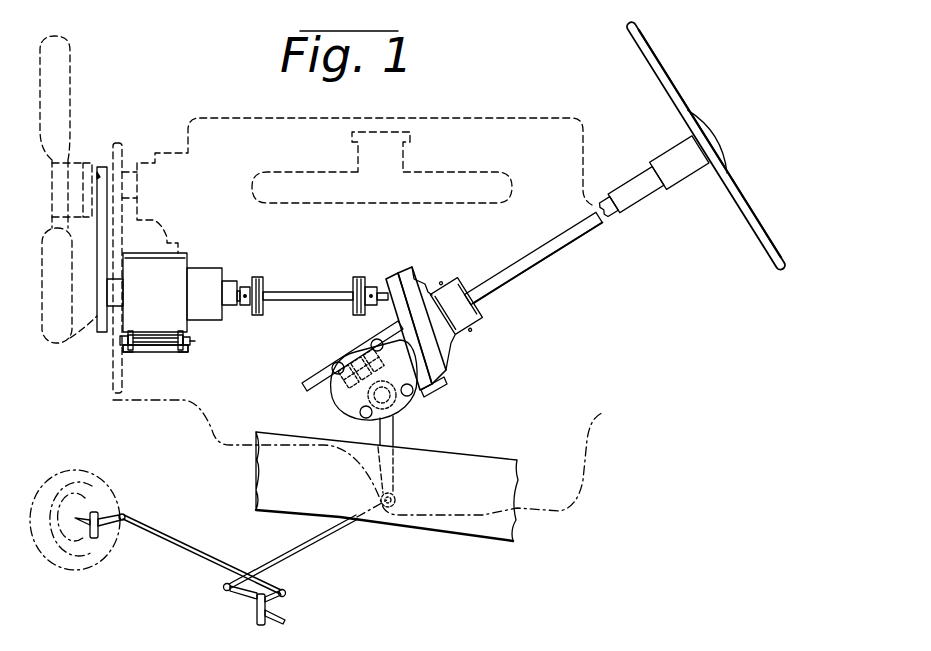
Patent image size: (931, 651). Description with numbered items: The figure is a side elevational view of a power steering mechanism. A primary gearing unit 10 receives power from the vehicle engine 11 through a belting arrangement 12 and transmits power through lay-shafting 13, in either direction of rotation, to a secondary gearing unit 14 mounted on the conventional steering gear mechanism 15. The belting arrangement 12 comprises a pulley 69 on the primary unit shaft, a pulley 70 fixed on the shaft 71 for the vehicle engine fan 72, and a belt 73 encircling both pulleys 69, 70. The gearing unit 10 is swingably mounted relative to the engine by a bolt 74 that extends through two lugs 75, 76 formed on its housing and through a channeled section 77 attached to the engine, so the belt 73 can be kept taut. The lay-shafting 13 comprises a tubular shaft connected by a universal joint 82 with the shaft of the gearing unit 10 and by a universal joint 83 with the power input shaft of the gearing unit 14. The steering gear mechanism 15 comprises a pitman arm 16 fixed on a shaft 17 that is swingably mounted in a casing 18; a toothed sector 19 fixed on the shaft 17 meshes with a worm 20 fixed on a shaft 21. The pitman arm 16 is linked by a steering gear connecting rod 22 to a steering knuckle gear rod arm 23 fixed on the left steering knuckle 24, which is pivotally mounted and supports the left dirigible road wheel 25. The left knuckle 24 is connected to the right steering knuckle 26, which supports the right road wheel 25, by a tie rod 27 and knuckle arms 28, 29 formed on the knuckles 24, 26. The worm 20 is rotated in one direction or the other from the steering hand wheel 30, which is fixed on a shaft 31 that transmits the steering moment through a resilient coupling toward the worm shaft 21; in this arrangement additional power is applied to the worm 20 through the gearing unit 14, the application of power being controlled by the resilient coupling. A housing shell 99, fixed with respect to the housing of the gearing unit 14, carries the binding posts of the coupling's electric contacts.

The primary gearing unit 10 is at (188, 262).
The vehicle engine 11 is at (281, 118).
The belting arrangement 12 is at (92, 246).
The lay-shafting 13 is at (303, 292).
The secondary gearing unit 14 is at (413, 283).
The steering gear mechanism 15 is at (341, 354).
The pitman arm 16 is at (396, 428).
The shaft 17 is at (400, 399).
The casing 18 is at (310, 380).
The toothed sector 19 is at (360, 404).
The worm 20 is at (332, 386).
The shaft 21 is at (374, 338).
The steering gear connecting rod 22 is at (312, 540).
The steering knuckle gear rod arm 23 is at (240, 594).
The left steering knuckle 24 is at (256, 616).
The dirigible road wheel 25 is at (60, 470).
The right steering knuckle 26 is at (96, 540).
The tie rod 27 is at (196, 549).
The knuckle arm 28 is at (281, 589).
The knuckle arm 29 is at (115, 523).
The steering hand wheel 30 is at (735, 192).
The shaft 31 is at (570, 238).
The pulley 69 is at (65, 338).
The pulley 70 is at (122, 160).
The shaft 71 is at (90, 160).
The vehicle engine fan 72 is at (70, 72).
The belt 73 is at (97, 228).
The bolt 74 is at (196, 341).
The lug 75 is at (185, 353).
The lug 76 is at (133, 353).
The channeled section 77 is at (166, 353).
The universal joint 82 is at (258, 277).
The universal joint 83 is at (362, 277).
The housing shell 99 is at (485, 324).